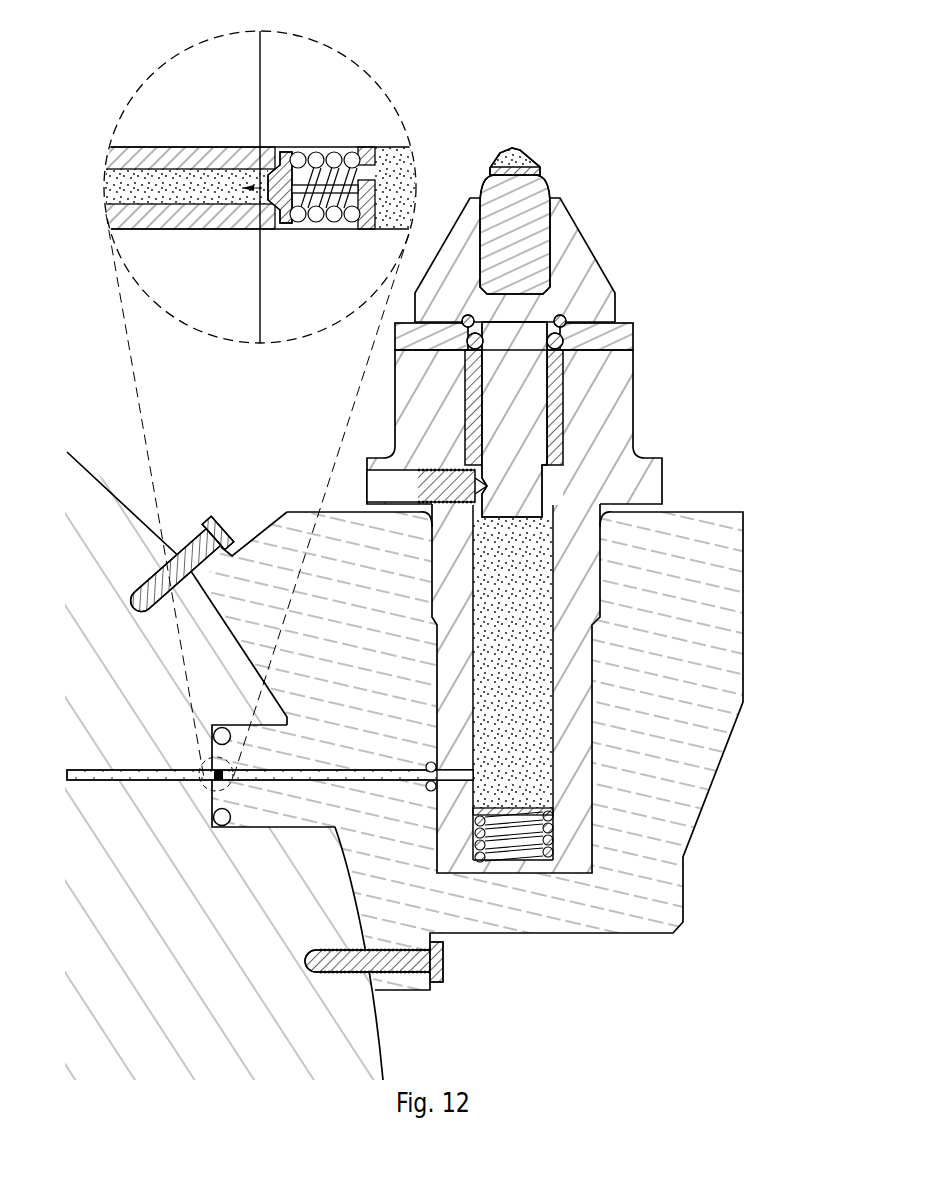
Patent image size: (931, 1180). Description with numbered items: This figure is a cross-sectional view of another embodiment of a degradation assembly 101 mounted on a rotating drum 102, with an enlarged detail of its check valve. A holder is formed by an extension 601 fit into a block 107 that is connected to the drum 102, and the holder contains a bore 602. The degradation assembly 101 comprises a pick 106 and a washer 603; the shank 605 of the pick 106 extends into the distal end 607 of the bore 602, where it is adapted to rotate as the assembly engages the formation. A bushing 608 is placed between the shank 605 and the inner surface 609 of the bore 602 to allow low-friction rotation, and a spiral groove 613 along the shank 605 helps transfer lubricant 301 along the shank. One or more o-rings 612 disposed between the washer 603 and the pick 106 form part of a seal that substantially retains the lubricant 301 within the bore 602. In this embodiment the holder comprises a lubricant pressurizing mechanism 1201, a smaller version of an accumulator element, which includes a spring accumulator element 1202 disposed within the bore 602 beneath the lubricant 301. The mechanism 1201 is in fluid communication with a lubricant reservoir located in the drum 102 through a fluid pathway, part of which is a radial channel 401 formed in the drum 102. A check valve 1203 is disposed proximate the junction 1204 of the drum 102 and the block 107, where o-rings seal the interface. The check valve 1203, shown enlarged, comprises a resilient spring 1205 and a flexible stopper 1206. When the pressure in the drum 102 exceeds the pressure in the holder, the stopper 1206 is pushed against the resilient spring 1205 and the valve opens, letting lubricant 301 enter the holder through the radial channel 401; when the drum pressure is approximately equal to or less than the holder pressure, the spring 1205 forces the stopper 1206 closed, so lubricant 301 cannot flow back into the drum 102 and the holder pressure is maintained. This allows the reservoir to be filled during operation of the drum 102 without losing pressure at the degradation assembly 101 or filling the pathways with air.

The degradation assembly 101 is at (462, 128).
The rotating drum 102 is at (105, 480).
The pick 106 is at (622, 224).
The block 107 is at (683, 922).
The lubricant 301 is at (537, 570).
The radial channel 401 is at (135, 775).
The extension 601 is at (663, 482).
The bore 602 is at (557, 673).
The washer 603 is at (645, 323).
The shank 605 is at (481, 407).
The distal end 607 is at (646, 350).
The bushing 608 is at (563, 433).
The inner surface 609 is at (555, 632).
The o-rings 612 is at (612, 370).
The spiral groove 613 is at (484, 448).
The lubricant pressurizing mechanism 1201 is at (515, 808).
The spring accumulator element 1202 is at (562, 866).
The check valve 1203 is at (141, 76).
The junction 1204 is at (220, 840).
The resilient spring 1205 is at (349, 157).
The flexible stopper 1206 is at (280, 156).